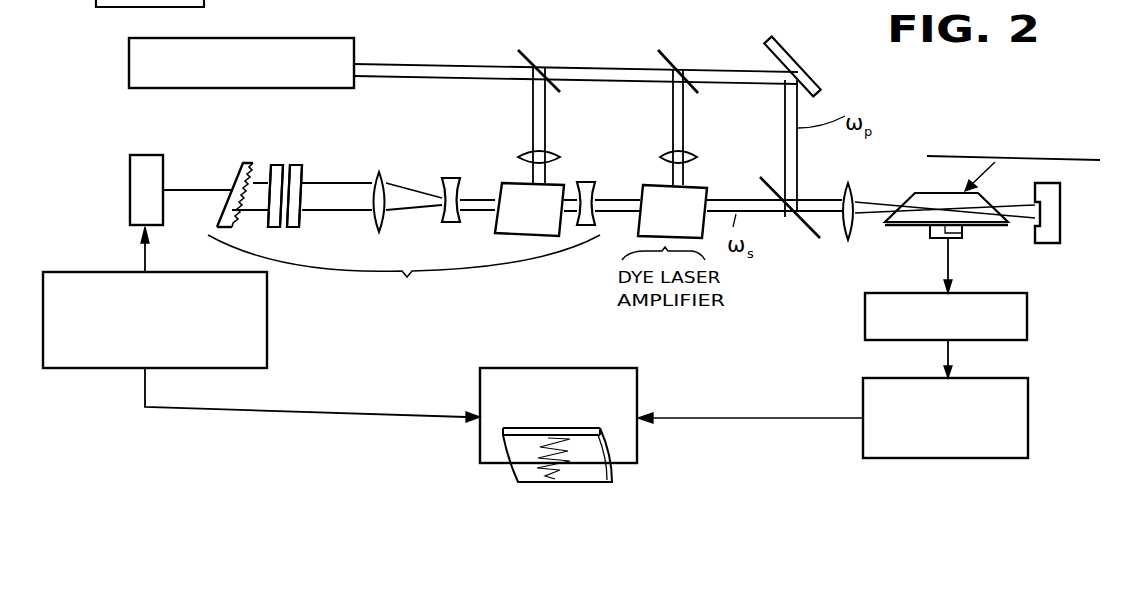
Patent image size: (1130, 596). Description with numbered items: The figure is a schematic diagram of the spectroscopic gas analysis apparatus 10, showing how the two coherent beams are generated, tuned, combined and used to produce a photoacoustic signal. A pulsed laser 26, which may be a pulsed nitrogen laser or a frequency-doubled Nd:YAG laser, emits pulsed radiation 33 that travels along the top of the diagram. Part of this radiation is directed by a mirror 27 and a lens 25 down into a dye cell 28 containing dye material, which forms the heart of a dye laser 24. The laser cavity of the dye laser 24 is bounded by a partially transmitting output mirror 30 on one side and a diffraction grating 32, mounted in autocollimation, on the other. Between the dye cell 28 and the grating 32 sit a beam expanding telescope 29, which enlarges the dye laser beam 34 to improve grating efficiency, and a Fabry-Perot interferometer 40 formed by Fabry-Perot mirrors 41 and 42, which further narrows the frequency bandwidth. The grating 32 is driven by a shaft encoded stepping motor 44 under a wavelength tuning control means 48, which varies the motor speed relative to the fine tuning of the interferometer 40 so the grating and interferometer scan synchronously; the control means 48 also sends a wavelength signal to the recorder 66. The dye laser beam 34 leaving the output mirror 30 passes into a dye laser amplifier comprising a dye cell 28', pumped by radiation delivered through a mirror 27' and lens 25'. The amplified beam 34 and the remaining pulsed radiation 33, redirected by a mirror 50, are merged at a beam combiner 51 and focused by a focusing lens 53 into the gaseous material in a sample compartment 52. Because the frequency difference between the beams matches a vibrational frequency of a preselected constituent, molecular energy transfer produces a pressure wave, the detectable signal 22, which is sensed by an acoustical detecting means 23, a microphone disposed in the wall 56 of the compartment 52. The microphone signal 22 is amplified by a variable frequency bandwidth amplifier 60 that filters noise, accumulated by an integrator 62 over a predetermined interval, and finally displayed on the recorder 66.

The apparatus 10 is at (194, 8).
The detectable signal 22 is at (951, 274).
The acoustical detecting means 23 is at (933, 232).
The dye laser 24 is at (513, 287).
The lens 25 is at (556, 140).
The lens 25' is at (699, 140).
The pulsed laser 26 is at (260, 88).
The mirror 27 is at (552, 100).
The mirror 27' is at (685, 101).
The dye cell 28 is at (529, 226).
The dye cell 28' is at (690, 194).
The beam expanding telescope 29 is at (464, 167).
The output mirror 30 is at (590, 186).
The diffraction grating 32 is at (238, 176).
The pulsed radiation 33 is at (440, 64).
The dye laser beam 34 is at (473, 187).
The Fabry-Perot interferometer 40 is at (306, 156).
The Fabry-Perot mirror 41 is at (272, 222).
The Fabry-Perot mirror 42 is at (289, 224).
The shaft encoded stepping motor 44 is at (143, 173).
The wavelength tuning control means 48 is at (263, 340).
The mirror 50 is at (790, 53).
The beam combiner 51 is at (790, 224).
The sample compartment 52 is at (925, 193).
The focusing lens 53 is at (935, 227).
The wall 56 is at (976, 227).
The variable frequency bandwidth amplifier 60 is at (1020, 318).
The integrator 62 is at (1020, 432).
The recorder 66 is at (602, 373).